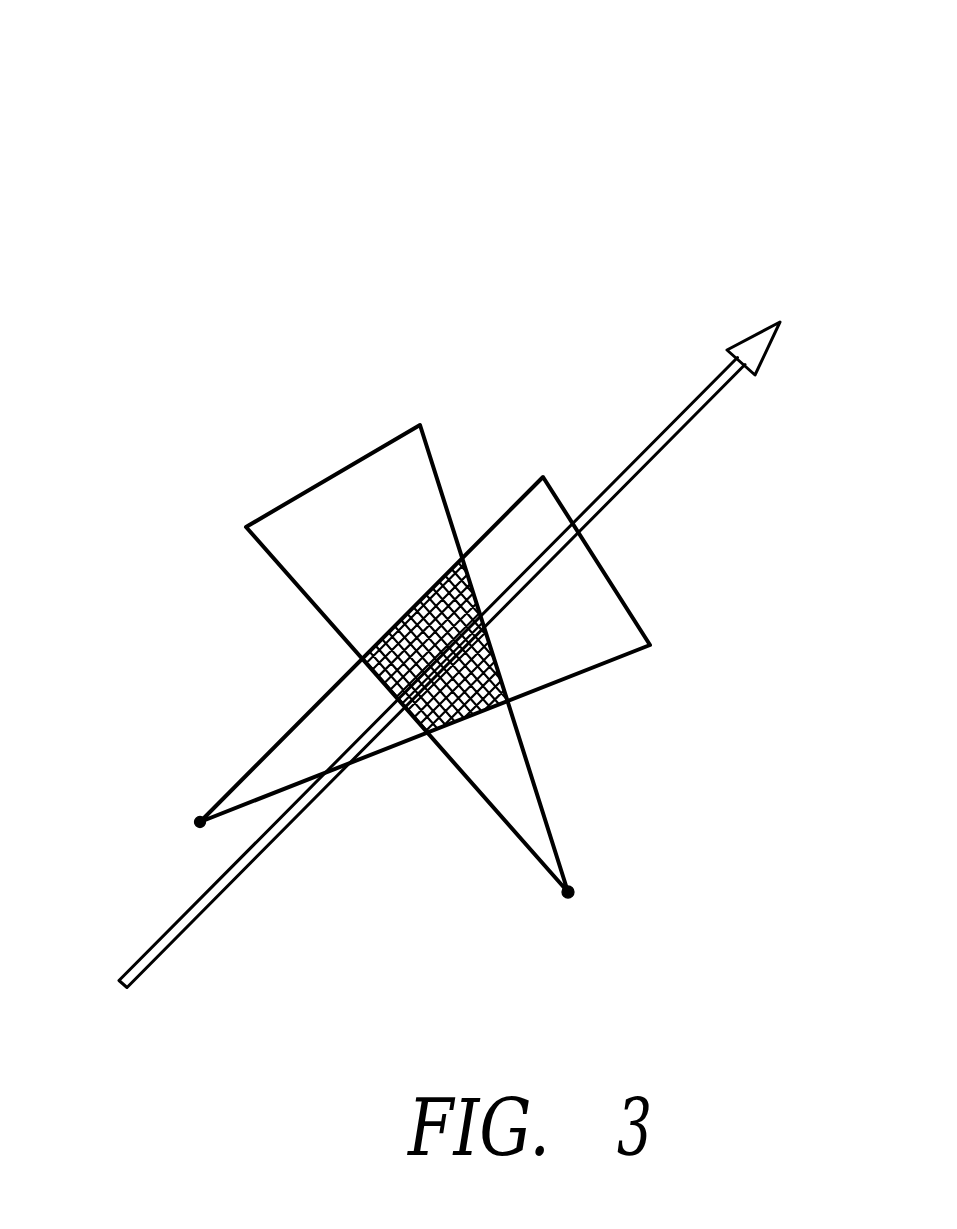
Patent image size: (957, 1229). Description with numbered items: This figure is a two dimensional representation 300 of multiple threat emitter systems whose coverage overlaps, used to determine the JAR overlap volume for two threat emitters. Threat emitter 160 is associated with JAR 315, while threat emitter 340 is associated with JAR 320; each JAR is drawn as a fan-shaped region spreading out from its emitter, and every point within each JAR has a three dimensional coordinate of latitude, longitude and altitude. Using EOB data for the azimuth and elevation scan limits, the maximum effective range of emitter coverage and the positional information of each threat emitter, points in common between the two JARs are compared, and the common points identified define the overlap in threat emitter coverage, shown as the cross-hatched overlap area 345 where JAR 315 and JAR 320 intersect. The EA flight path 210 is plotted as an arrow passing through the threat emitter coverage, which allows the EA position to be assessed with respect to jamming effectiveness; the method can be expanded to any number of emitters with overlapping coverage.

The scanning geometry arrangement 300 is at (548, 292).
The EA flight path 210 is at (690, 418).
The JAR 315 is at (300, 490).
The JAR 320 is at (629, 603).
The overlap region 345 is at (455, 713).
The threat emitter 340 is at (199, 825).
The threat emitter 160 is at (570, 897).